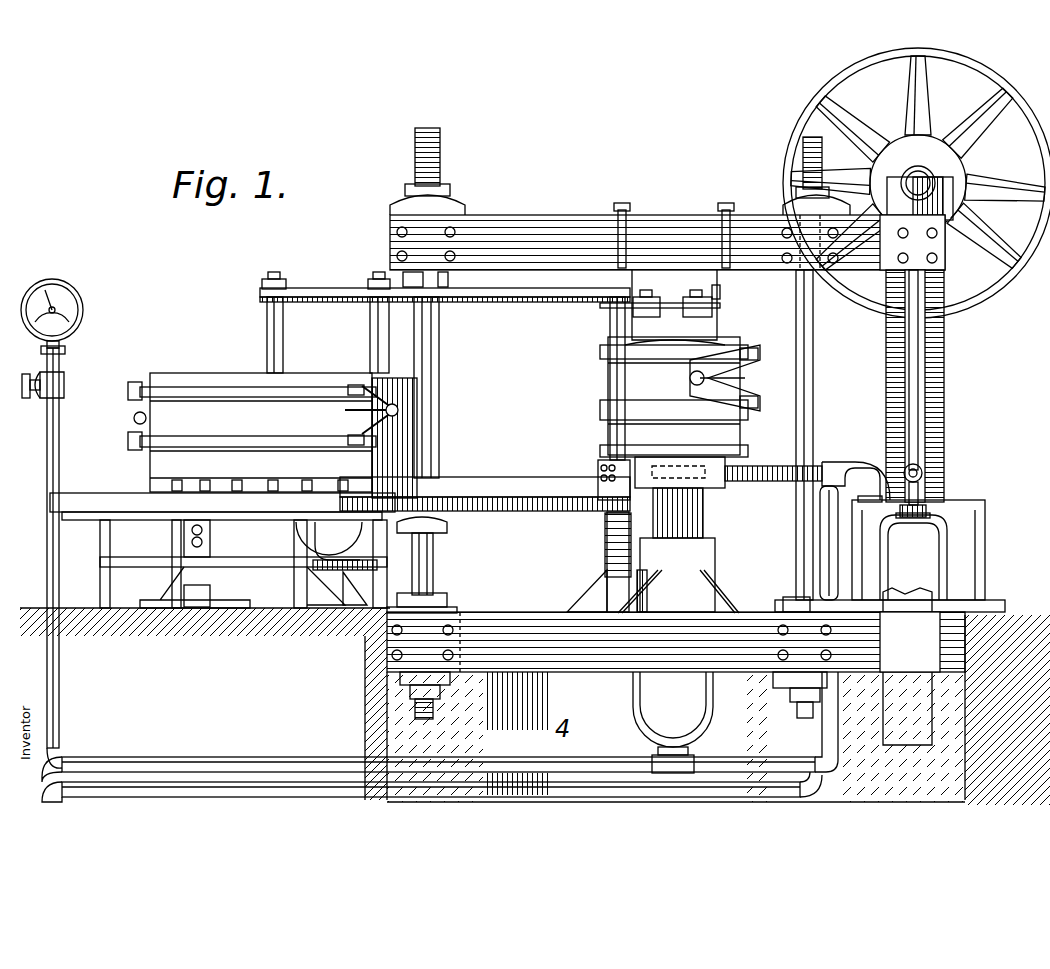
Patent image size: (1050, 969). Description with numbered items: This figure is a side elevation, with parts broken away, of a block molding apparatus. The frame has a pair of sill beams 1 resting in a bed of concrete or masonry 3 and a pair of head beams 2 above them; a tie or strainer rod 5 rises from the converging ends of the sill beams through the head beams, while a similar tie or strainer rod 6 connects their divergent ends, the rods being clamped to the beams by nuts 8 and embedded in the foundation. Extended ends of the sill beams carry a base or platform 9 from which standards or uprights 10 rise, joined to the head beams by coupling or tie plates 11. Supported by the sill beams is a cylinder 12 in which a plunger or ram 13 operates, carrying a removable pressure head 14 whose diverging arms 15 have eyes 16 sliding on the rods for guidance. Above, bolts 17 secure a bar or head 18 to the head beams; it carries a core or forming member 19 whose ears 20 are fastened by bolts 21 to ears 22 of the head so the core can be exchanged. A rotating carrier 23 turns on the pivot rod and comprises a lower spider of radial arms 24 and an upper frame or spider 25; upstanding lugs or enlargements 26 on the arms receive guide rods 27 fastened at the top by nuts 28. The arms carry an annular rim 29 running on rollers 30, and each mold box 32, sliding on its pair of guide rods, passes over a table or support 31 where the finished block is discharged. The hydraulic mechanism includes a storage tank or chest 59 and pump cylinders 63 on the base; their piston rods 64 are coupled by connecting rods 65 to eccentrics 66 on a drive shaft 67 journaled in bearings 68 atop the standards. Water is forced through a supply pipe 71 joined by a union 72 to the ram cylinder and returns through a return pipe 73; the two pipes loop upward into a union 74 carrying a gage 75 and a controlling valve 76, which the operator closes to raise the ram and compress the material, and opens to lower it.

The sill beams 1 is at (598, 655).
The head beams 2 is at (540, 228).
The bed of concrete or masonry 3 is at (365, 715).
The tie or strainer rod 5 is at (434, 325).
The tie or strainer rod 6 is at (797, 380).
The nuts 8 is at (412, 188).
The base or platform 9 is at (965, 605).
The standards or uprights 10 is at (943, 345).
The coupling or tie plates 11 is at (885, 262).
The cylinder 12 is at (707, 556).
The plunger or ram 13 is at (700, 518).
The pressure head 14 is at (712, 465).
The diverging arms 15 is at (790, 468).
The eyes 16 is at (835, 476).
The bolts 17 is at (630, 228).
The bar or head 18 is at (661, 293).
The core or forming member 19 is at (720, 328).
The ears 20 is at (712, 312).
The bolts 21 is at (640, 306).
The ears 22 is at (718, 300).
The rotating carrier 23 is at (495, 476).
The radial arms 24 is at (440, 465).
The upper frame or spider 25 is at (506, 300).
The upstanding lugs or enlargements 26 is at (606, 468).
The guide rods 27 is at (285, 323).
The nuts 28 is at (270, 277).
The annular rim 29 is at (517, 512).
The rollers 30 is at (340, 525).
The table or support 31 is at (93, 496).
The mold boxes 32 is at (185, 412).
The storage tank or chest 59 is at (966, 508).
The pump cylinders 63 is at (928, 552).
The piston rods 64 is at (930, 512).
The connecting rods 65 is at (918, 387).
The eccentrics 66 is at (966, 202).
The drive shaft 67 is at (932, 180).
The bearings 68 is at (920, 165).
The supply pipe 71 is at (725, 745).
The union 72 is at (700, 760).
The return pipe 73 is at (820, 522).
The union 74 is at (62, 383).
The gage 75 is at (84, 312).
The controlling valve 76 is at (22, 388).